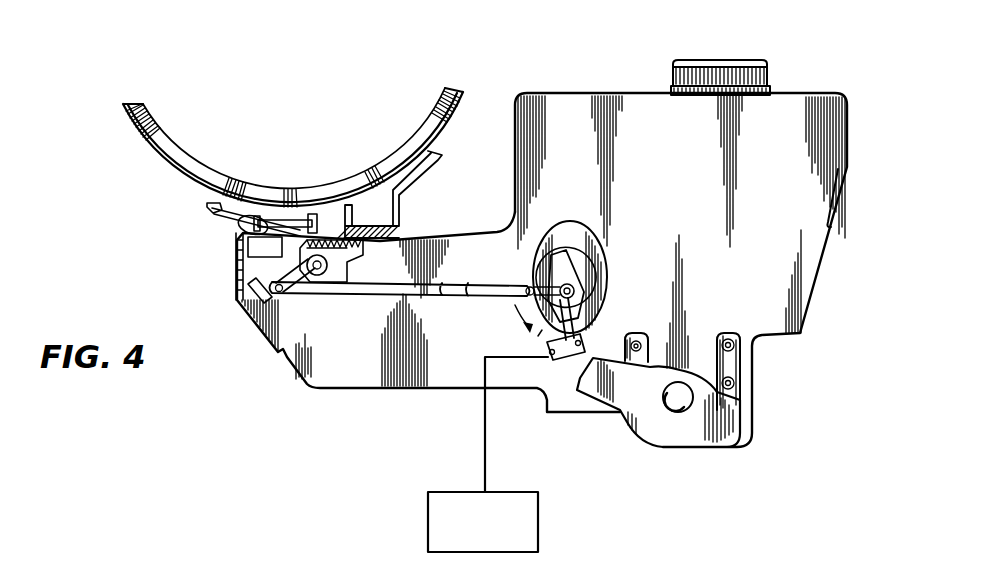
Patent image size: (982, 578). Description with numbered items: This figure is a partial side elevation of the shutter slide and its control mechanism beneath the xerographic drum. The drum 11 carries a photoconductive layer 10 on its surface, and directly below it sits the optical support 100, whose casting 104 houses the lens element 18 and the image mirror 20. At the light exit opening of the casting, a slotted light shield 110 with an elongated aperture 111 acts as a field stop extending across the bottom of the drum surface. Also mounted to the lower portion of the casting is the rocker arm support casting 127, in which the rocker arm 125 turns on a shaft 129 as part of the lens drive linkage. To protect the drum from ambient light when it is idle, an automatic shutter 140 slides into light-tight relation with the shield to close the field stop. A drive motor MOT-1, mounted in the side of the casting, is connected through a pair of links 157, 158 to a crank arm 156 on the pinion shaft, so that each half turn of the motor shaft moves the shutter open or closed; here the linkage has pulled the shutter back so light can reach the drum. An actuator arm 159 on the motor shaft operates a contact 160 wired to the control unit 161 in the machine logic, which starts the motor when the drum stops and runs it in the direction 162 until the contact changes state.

The photoconductive layer 10 is at (133, 121).
The drum 11 is at (180, 160).
The lens element 18 is at (765, 81).
The image mirror 20 is at (249, 301).
The optical support 100 is at (582, 78).
The casting 104 is at (810, 201).
The light shield 110 is at (240, 226).
The aperture 111 is at (286, 224).
The rocker arm 125 is at (664, 368).
The rocker arm support casting 127 is at (741, 434).
The shaft 129 is at (678, 406).
The automatic shutter 140 is at (349, 270).
The crank arm 156 is at (302, 290).
The link 157 is at (542, 266).
The link 158 is at (490, 297).
The actuator arm 159 is at (588, 256).
The contact 160 is at (582, 342).
The control unit 161 is at (540, 530).
The direction of rotation 162 is at (523, 329).
The drive motor MOT-1 is at (580, 229).